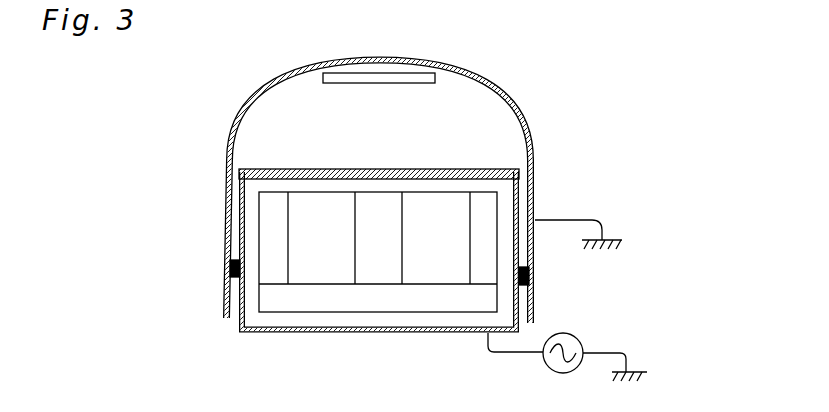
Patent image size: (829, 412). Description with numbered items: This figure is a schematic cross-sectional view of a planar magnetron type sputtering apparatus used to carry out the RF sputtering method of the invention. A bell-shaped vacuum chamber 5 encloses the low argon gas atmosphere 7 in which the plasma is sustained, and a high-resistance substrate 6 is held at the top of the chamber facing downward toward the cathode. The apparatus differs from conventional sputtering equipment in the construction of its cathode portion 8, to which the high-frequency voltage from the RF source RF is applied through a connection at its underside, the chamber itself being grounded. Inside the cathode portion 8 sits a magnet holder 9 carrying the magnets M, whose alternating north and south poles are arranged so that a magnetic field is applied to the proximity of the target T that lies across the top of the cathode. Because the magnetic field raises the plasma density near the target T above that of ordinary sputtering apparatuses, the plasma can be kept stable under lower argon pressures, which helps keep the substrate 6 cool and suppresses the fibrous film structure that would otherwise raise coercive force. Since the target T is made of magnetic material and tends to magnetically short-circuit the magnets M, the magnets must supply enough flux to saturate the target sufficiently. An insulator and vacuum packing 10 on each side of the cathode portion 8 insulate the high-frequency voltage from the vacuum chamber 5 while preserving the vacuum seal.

The vacuum chamber 5 is at (532, 158).
The high-resistance substrate 6 is at (435, 79).
The low argon gas atmosphere 7 is at (485, 112).
The cathode portion 8 is at (330, 333).
The magnet assembly holder 9 is at (348, 182).
The insulator and vacuum packing 10 is at (529, 272).
The target T is at (283, 169).
The magnets M is at (275, 240).
The RF power source RF is at (567, 342).